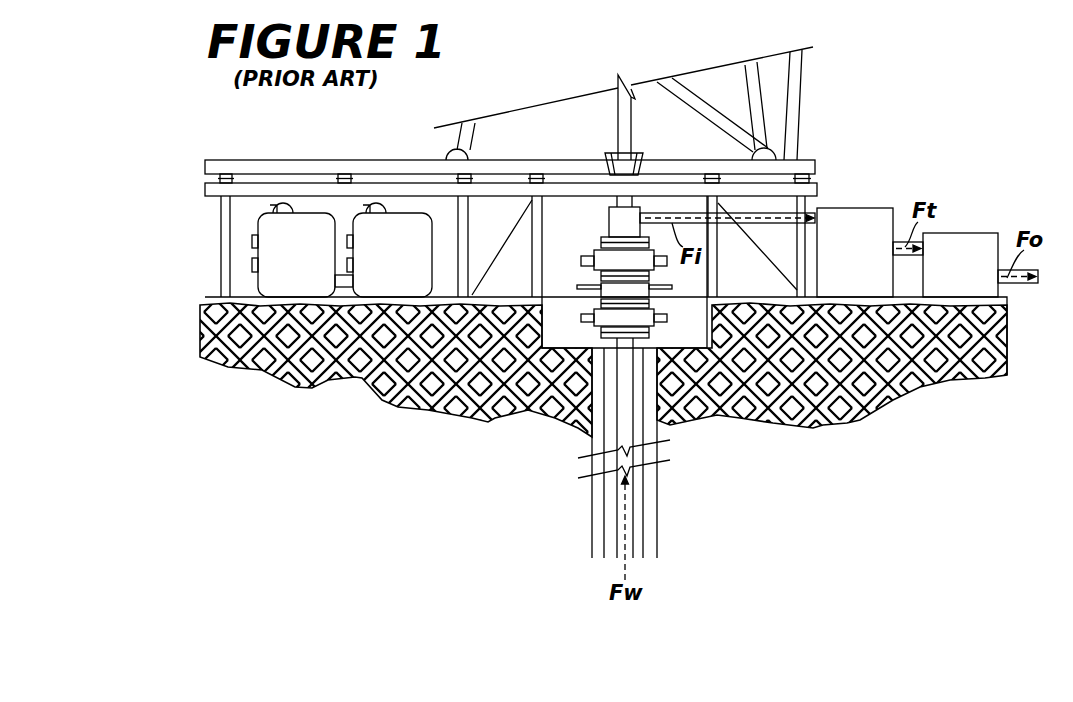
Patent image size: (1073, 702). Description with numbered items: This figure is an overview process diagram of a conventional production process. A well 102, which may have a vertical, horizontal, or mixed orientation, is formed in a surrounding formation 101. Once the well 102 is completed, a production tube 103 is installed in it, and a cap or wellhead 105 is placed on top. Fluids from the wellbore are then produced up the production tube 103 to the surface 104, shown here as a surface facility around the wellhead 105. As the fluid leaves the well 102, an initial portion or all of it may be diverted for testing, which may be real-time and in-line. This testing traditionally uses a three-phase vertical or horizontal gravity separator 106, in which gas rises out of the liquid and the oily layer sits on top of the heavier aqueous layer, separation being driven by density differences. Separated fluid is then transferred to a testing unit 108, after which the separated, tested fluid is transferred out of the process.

The formation 101 is at (835, 372).
The well 102 is at (655, 505).
The production tube 103 is at (633, 400).
The surface 104 is at (751, 306).
The wellhead 105 is at (609, 222).
The gravity separator 106 is at (876, 264).
The testing unit 108 is at (981, 279).